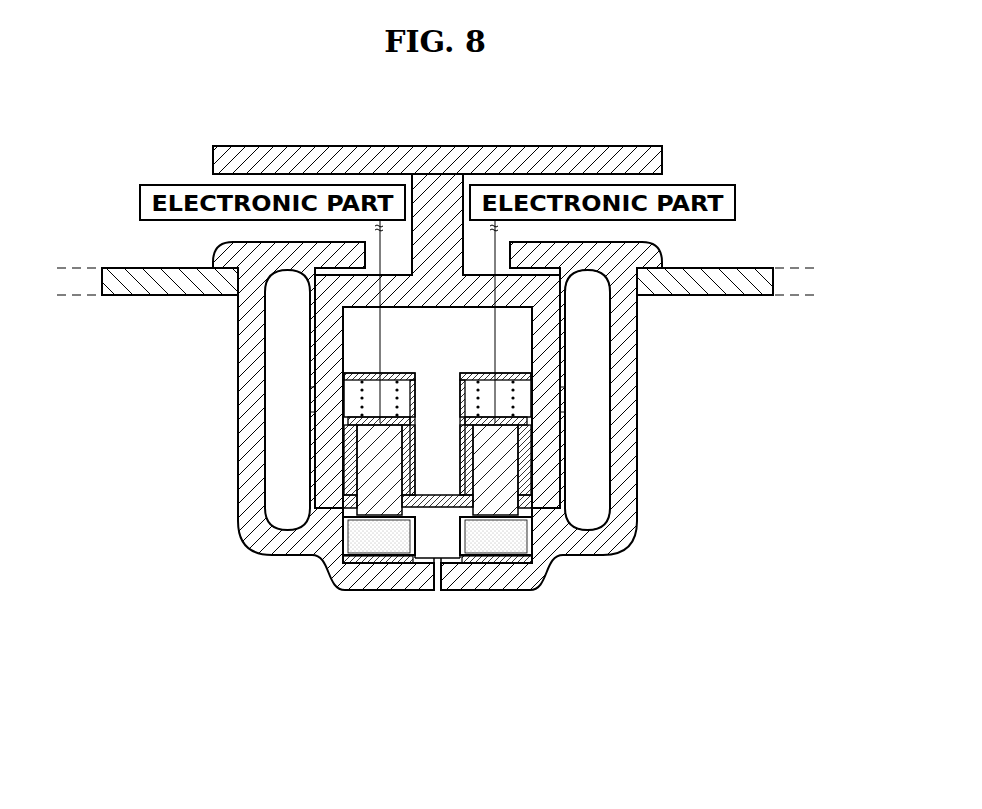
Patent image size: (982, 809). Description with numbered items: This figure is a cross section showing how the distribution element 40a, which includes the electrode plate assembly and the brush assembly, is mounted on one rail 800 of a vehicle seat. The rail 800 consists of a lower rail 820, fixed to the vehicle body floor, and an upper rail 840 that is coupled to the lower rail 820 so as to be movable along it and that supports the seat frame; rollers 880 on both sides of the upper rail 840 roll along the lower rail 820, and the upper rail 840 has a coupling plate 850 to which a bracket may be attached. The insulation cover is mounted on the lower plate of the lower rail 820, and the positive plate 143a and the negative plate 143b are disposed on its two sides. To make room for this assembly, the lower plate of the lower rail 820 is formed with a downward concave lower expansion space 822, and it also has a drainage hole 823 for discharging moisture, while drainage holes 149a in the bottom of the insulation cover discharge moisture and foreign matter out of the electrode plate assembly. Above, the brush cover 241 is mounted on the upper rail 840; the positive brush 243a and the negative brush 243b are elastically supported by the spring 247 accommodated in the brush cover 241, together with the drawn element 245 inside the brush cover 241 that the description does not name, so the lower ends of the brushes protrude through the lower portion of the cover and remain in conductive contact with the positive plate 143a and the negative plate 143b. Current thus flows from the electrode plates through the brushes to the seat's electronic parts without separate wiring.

The coupling plate 850 is at (313, 162).
The rail 800 is at (357, 382).
The lower rail 820 is at (262, 318).
The upper rail 840 is at (325, 352).
The spring 247 is at (360, 397).
The core 245 is at (355, 437).
The brush cover 241 is at (328, 516).
The roller 880 is at (587, 400).
The distribution element 40a is at (296, 557).
The positive brush 243a is at (375, 542).
The negative brush 243b is at (507, 478).
The positive plate 143a is at (373, 547).
The negative plate 143b is at (540, 591).
The lower expansion space 822 is at (490, 560).
The drainage hole 823 is at (446, 562).
The drainage hole 149a is at (477, 563).